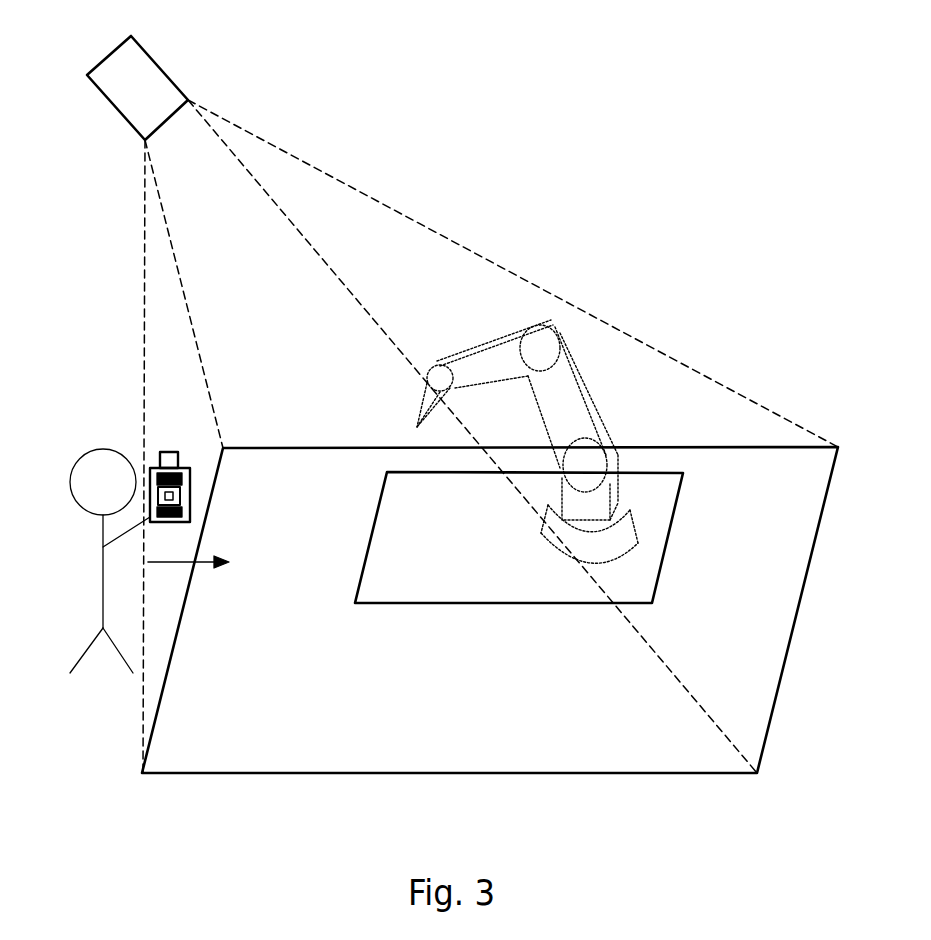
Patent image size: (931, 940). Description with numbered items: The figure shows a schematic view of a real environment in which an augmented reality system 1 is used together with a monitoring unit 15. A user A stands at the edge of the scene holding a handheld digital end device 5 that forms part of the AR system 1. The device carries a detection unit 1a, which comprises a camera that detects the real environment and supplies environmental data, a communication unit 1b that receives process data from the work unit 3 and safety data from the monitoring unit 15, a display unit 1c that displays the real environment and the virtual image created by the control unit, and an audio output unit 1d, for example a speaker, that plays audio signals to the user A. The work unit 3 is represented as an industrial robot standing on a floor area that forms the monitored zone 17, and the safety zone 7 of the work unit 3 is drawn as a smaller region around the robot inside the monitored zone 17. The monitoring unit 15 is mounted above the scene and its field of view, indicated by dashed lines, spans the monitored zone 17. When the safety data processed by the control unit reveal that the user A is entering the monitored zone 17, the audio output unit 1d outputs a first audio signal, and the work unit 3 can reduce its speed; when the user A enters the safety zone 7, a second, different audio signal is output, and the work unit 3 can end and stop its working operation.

The augmented reality system 1 is at (210, 460).
The digital end device 5 is at (210, 478).
The detection unit 1a is at (175, 448).
The communication unit 1b is at (180, 472).
The display unit 1c is at (180, 492).
The audio output unit 1d is at (188, 520).
The work unit 3 is at (552, 322).
The safety zone 7 is at (420, 582).
The monitoring unit 15 is at (157, 60).
The monitored zone 17 is at (295, 743).
The user A is at (103, 583).